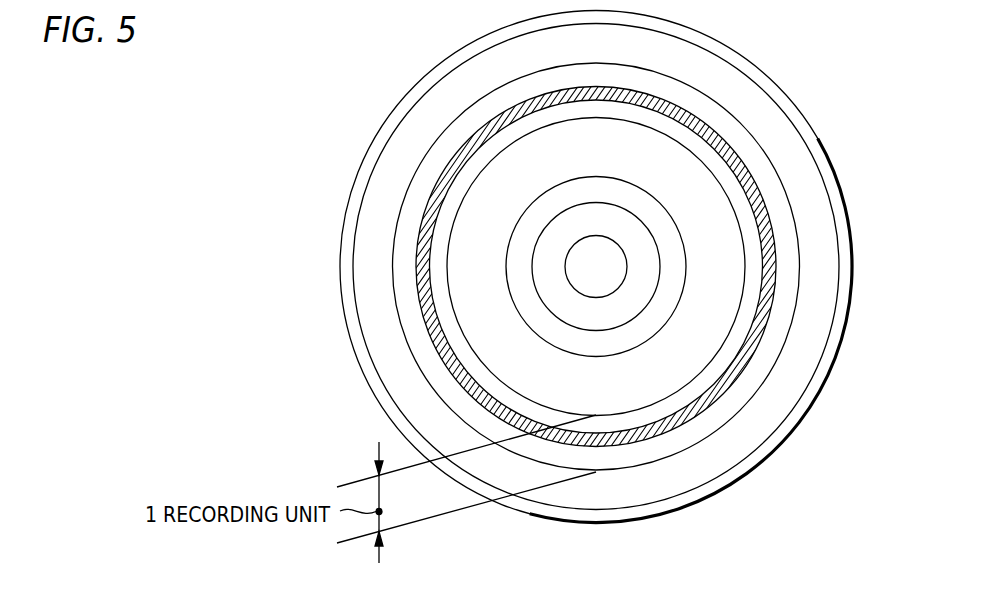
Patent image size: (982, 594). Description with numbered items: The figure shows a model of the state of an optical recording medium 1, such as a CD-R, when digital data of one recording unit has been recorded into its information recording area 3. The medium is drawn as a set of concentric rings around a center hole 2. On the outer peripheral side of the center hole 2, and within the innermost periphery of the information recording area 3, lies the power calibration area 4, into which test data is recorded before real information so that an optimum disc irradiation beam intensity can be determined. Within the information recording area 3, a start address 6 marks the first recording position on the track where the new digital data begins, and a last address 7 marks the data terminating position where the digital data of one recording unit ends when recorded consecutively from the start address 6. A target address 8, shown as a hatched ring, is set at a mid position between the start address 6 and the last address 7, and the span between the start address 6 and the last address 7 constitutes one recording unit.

The optical recording medium 1 is at (769, 79).
The center hole 2 is at (597, 298).
The information recording area 3 is at (814, 204).
The power calibration area 4 is at (679, 274).
The start address 6 is at (596, 415).
The last address 7 is at (596, 472).
The target address 8 is at (712, 393).